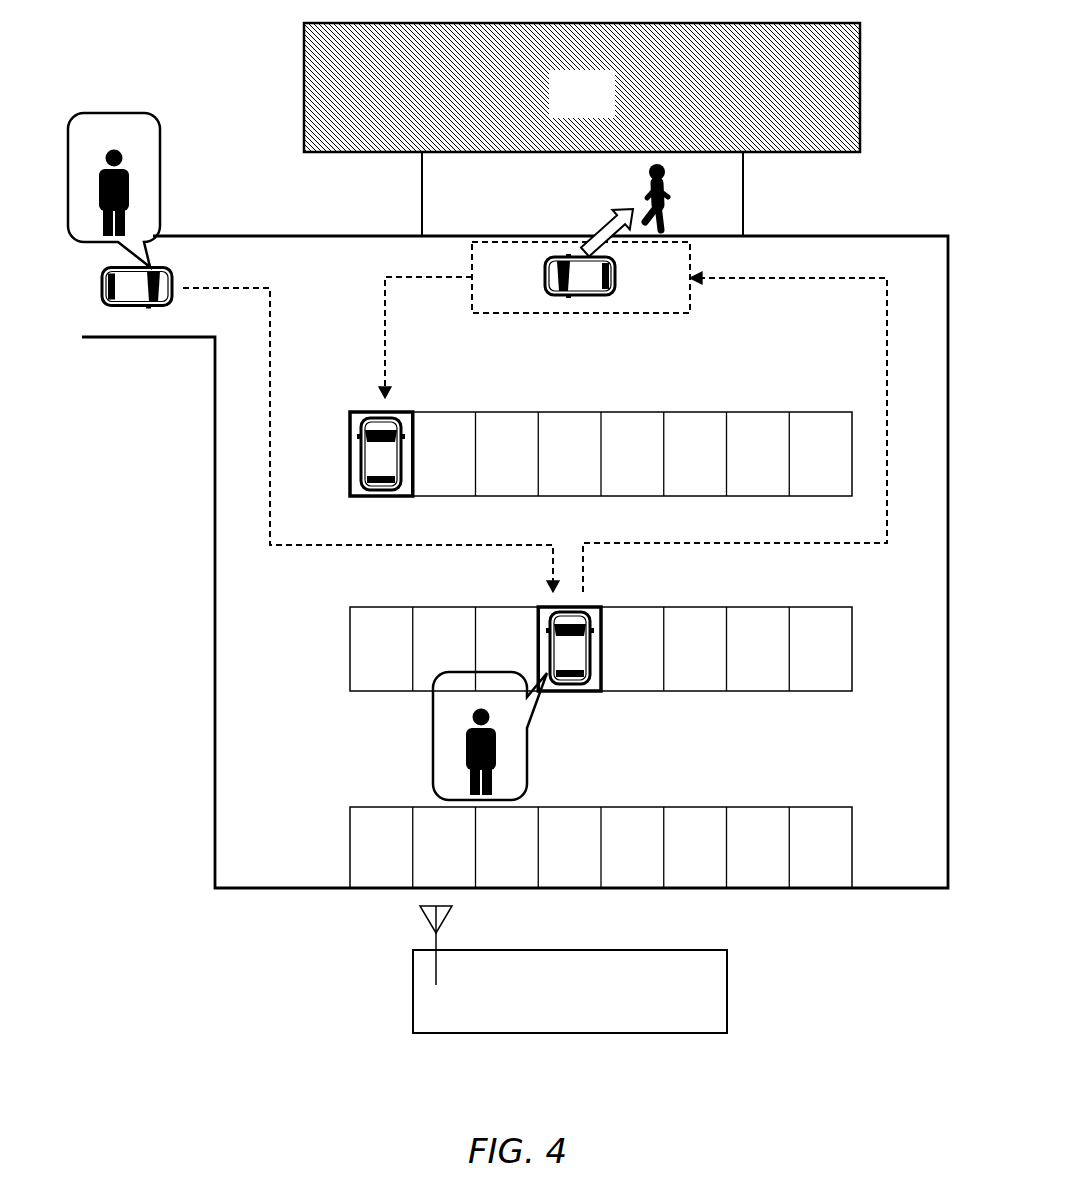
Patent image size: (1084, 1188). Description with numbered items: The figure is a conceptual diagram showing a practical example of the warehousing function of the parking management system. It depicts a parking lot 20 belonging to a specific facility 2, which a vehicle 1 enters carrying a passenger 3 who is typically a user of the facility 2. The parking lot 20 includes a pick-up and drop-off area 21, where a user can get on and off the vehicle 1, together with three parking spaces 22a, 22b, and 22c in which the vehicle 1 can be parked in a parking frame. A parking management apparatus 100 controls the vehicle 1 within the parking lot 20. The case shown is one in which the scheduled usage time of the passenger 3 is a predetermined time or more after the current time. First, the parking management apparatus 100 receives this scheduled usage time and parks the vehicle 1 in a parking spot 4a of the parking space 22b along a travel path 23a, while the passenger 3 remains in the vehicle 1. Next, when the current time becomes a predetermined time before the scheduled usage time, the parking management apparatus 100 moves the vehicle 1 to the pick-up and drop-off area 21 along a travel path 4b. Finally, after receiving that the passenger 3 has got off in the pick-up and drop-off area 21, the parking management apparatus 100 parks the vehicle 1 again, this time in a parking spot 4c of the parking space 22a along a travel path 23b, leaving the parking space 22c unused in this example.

The vehicle 1 is at (100, 296).
The facility 2 is at (582, 87).
The passenger 3 is at (106, 168).
The parking spot 4a is at (273, 335).
The travel path 4b is at (887, 388).
The parking spot 4c is at (384, 282).
The parking lot 20 is at (930, 226).
The pick-up and drop-off area 21 is at (670, 292).
The parking space 22a is at (800, 406).
The parking space 22b is at (800, 604).
The parking space 22c is at (800, 804).
The travel path 23a is at (603, 692).
The travel path 23b is at (410, 411).
The parking management apparatus 100 is at (722, 950).